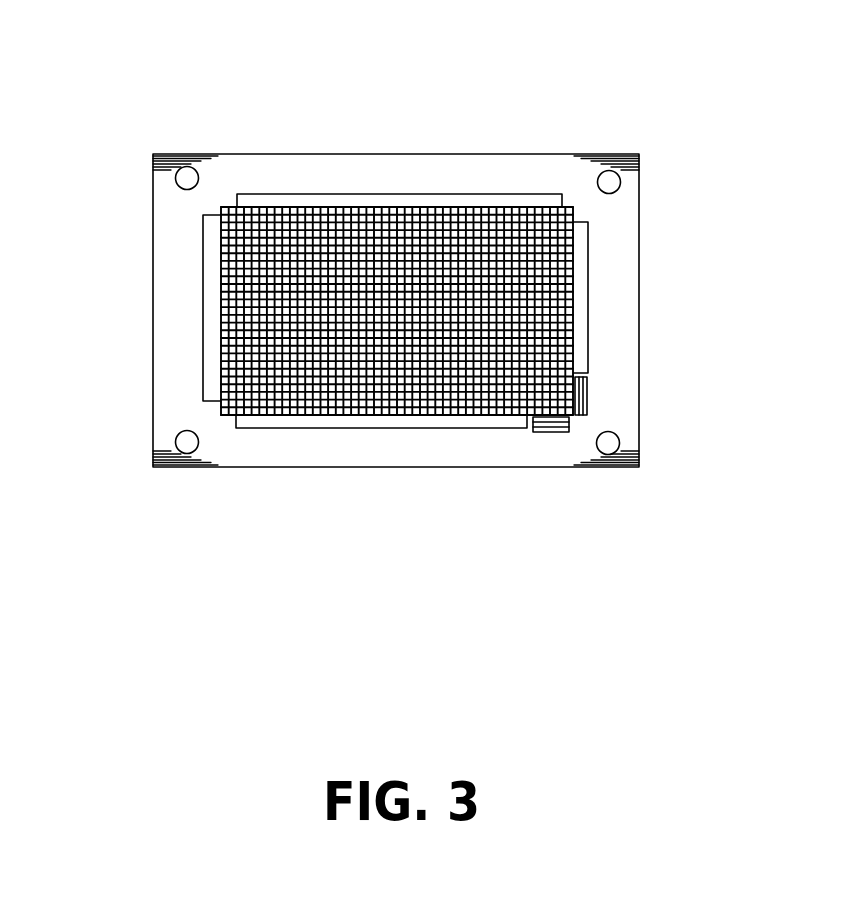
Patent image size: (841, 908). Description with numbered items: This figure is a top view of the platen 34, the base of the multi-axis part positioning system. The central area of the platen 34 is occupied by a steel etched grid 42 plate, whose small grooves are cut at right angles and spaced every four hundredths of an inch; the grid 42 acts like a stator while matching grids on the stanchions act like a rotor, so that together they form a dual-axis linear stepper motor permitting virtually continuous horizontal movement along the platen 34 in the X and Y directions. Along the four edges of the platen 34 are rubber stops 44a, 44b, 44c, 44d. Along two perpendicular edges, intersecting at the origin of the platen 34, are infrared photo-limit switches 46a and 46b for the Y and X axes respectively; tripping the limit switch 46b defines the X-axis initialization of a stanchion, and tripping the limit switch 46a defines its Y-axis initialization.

The platen 34 is at (208, 117).
The steel etched grid 42 is at (247, 338).
The rubber stop 44a is at (467, 198).
The rubber stop 44b is at (582, 270).
The rubber stop 44c is at (377, 420).
The rubber stop 44d is at (212, 313).
The Y-axis infrared photo-limit switch 46a is at (588, 390).
The X-axis infrared photo-limit switch 46b is at (528, 433).